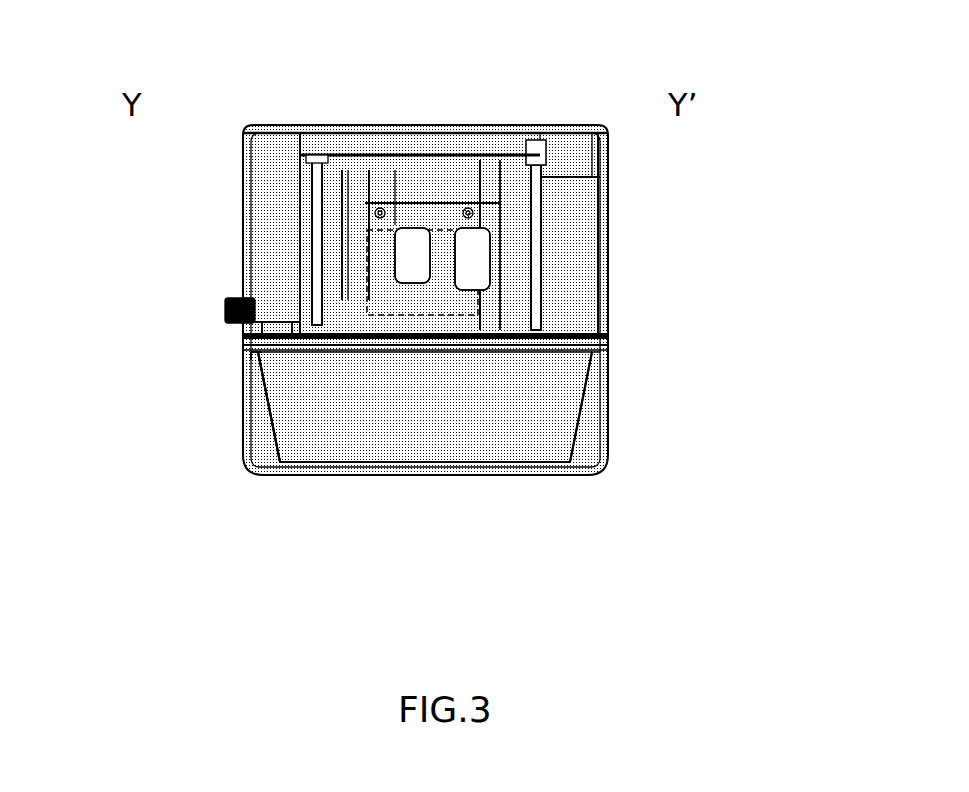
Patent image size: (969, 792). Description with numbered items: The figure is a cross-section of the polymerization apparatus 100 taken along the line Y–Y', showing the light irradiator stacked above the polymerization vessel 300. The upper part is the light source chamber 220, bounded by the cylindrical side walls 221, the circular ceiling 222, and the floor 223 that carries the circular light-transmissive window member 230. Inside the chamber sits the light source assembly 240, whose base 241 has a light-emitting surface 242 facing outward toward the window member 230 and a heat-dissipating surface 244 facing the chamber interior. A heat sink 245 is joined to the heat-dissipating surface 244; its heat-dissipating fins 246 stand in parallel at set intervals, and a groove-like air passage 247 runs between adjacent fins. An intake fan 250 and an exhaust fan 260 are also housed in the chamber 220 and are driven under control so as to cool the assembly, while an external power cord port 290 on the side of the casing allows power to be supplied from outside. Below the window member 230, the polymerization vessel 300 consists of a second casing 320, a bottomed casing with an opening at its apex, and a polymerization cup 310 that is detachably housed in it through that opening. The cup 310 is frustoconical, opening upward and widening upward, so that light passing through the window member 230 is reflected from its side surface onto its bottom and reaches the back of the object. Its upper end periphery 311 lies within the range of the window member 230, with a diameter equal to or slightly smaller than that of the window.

The polymerization apparatus 100 is at (452, 613).
The light source chamber 220 is at (567, 225).
The cylindrical side walls 221 is at (602, 200).
The circular ceiling 222 is at (290, 128).
The floor 223 is at (276, 330).
The light-transmissive window member 230 is at (277, 327).
The light source assembly 240 is at (608, 342).
The base 241 is at (425, 336).
The light-emitting surface 242 is at (430, 337).
The heat-dissipating surface 244 is at (428, 318).
The heat sink 245 is at (480, 178).
The heat-dissipating fins 246 is at (490, 245).
The air passage 247 is at (442, 186).
The intake fan 250 is at (467, 258).
The exhaust fan 260 is at (442, 259).
The external power cord port 290 is at (222, 313).
The polymerization vessel 300 is at (614, 435).
The second casing 320 is at (425, 407).
The polymerization cup 310 is at (270, 436).
The upper end periphery 311 is at (248, 358).